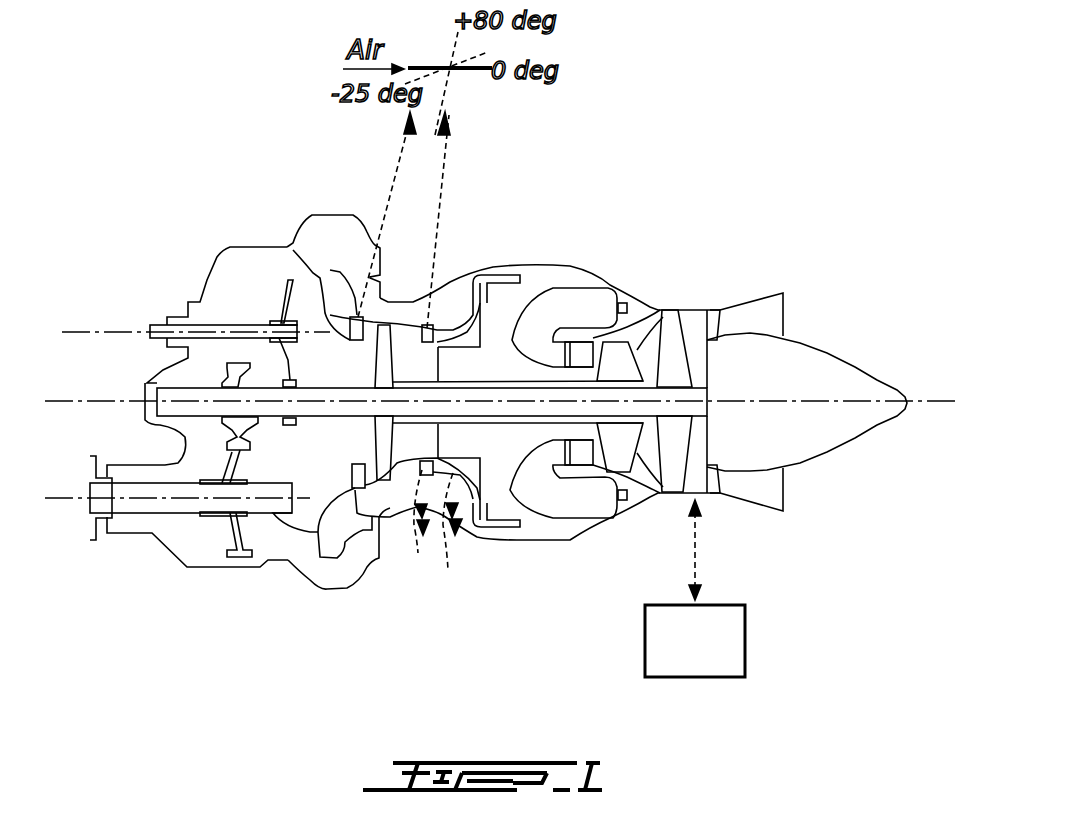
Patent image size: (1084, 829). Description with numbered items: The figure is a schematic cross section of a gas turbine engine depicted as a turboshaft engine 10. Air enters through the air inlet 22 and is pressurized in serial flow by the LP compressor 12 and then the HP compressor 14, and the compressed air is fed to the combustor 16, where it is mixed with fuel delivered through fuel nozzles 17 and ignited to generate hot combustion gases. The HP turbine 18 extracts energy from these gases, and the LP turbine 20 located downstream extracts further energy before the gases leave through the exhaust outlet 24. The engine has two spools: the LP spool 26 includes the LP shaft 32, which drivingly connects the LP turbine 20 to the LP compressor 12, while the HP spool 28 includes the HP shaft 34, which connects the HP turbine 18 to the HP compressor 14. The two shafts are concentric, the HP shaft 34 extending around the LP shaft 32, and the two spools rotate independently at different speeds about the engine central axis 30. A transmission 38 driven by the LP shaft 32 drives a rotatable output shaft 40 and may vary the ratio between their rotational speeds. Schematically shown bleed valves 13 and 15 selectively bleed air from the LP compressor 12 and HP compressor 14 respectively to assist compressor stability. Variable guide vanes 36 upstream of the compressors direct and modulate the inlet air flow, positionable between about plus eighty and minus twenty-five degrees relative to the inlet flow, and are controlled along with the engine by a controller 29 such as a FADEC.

The turboshaft engine 10 is at (760, 234).
The LP compressor 12 is at (383, 322).
The bleed valve 13 is at (415, 527).
The HP compressor 14 is at (462, 340).
The bleed valve 15 is at (446, 536).
The combustor 16 is at (577, 310).
The fuel nozzles 17 is at (640, 340).
The HP turbine 18 is at (620, 447).
The LP turbine 20 is at (675, 327).
The air inlet 22 is at (302, 568).
The exhaust outlet 24 is at (768, 495).
The LP spool 26 is at (405, 417).
The HP spool 28 is at (497, 427).
The controller 29 is at (748, 643).
The engine central axis 30 is at (942, 401).
The LP shaft 32 is at (330, 417).
The HP shaft 34 is at (548, 417).
The variable guide vanes 36 is at (353, 317).
The transmission 38 is at (197, 432).
The output shaft 40 is at (140, 513).